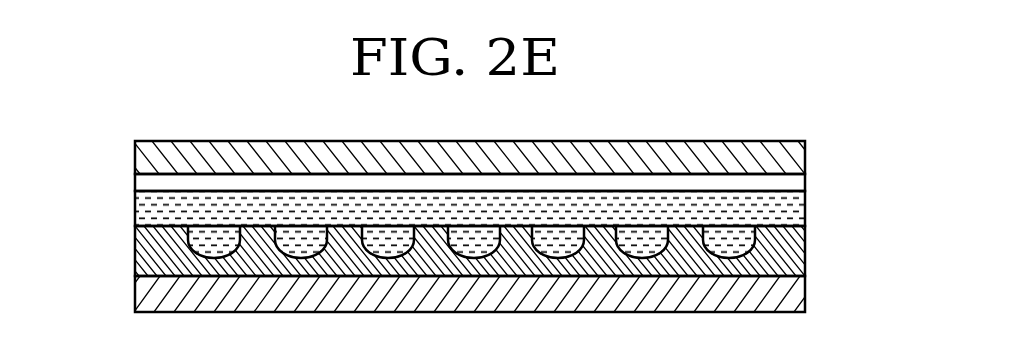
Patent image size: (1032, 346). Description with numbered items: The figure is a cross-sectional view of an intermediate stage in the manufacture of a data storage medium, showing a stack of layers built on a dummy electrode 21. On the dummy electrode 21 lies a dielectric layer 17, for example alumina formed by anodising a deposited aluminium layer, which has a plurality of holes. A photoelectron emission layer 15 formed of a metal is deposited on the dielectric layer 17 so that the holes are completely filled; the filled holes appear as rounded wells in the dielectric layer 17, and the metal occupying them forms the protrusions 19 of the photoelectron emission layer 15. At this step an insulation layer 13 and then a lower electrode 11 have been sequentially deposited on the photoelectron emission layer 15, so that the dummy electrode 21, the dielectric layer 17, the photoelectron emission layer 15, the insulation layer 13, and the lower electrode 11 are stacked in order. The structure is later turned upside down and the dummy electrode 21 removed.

The lower electrode 11 is at (805, 158).
The insulation layer 13 is at (805, 183).
The photoelectron emission layer 15 is at (805, 208).
The dielectric layer 17 is at (805, 251).
The protrusions 19 is at (205, 256).
The dummy electrode 21 is at (805, 293).